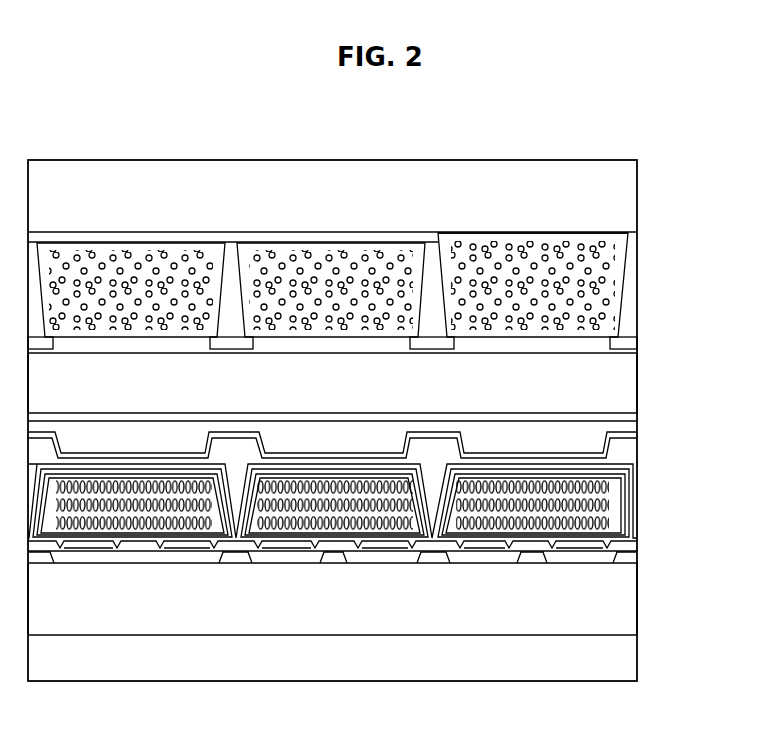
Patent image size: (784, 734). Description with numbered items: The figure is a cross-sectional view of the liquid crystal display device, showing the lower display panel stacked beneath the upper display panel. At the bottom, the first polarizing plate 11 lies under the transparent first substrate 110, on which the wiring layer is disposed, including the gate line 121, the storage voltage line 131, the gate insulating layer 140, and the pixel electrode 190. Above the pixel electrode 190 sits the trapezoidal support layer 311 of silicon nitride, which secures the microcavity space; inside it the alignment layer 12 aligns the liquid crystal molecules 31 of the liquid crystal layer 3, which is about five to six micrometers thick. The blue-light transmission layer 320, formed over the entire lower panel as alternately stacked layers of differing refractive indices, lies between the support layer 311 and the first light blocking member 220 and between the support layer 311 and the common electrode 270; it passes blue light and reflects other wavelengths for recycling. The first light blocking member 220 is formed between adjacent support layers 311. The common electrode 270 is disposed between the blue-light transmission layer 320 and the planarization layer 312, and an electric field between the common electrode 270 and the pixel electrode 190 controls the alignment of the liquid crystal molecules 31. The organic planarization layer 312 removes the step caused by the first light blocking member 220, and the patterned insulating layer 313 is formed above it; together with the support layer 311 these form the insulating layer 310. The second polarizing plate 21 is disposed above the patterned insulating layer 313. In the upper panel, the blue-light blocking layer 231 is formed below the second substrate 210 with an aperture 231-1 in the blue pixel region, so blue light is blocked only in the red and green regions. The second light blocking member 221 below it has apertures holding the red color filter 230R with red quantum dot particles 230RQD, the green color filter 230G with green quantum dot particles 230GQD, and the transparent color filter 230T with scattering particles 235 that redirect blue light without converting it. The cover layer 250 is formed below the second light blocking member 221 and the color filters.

The second substrate 210 is at (624, 193).
The red color filter 230R is at (108, 253).
The red quantum dot particles 230RQD is at (163, 255).
The blue-light blocking layer 231 is at (250, 238).
The green color filter 230G is at (300, 250).
The green quantum dot particles 230GQD is at (365, 252).
The cover layer 250 is at (475, 348).
The transparent color filter 230T is at (508, 237).
The scattering particles 235 is at (567, 240).
The aperture 231-1 is at (590, 234).
The second light blocking member 221 is at (628, 322).
The second polarizing plate 21 is at (625, 383).
The patterned insulating layer 313 is at (630, 415).
The planarization layer 312 is at (596, 442).
The insulating layer 310 is at (695, 410).
The support layer 311 is at (622, 467).
The blue-light transmission layer 320 is at (627, 488).
The first light blocking member 220 is at (633, 507).
The alignment layer 12 is at (620, 519).
The liquid crystal layer 3 is at (580, 533).
The liquid crystal molecules 31 is at (614, 548).
The pixel electrode 190 is at (478, 551).
The gate insulating layer 140 is at (560, 552).
The gate line 121 is at (428, 563).
The storage voltage line 131 is at (332, 563).
The first substrate 110 is at (381, 620).
The first polarizing plate 11 is at (628, 658).
The common electrode 270 is at (512, 460).